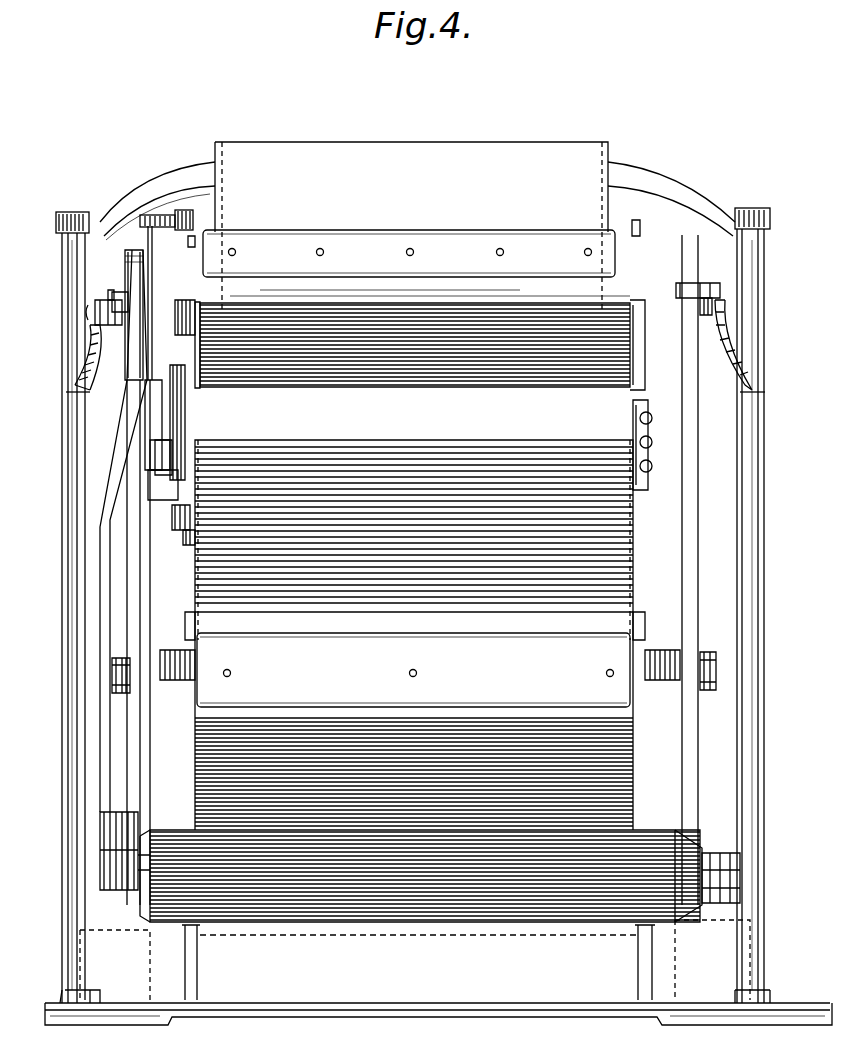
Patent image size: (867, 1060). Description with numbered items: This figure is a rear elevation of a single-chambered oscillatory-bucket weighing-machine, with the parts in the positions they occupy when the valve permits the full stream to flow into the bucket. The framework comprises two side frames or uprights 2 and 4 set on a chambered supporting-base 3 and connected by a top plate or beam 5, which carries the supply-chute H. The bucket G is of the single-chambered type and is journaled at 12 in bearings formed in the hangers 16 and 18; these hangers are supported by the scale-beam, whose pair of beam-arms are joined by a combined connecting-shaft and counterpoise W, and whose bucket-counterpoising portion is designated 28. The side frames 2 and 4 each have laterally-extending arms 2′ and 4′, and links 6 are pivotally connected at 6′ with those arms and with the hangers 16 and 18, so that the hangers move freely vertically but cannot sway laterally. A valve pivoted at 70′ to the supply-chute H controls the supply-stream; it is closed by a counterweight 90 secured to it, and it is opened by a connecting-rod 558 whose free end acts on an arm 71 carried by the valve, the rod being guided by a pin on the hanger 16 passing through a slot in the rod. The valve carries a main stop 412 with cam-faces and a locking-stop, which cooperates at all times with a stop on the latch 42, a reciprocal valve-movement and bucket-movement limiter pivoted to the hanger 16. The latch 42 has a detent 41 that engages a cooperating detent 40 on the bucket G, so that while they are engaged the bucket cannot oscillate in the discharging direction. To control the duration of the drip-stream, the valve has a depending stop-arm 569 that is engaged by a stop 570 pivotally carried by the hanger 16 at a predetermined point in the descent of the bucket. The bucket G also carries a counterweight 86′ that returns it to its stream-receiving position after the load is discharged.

The side frame 2 is at (68, 537).
The side frame 4 is at (752, 532).
The supporting-base 3 is at (400, 985).
The top plate 5 is at (695, 208).
The supply-chute H is at (411, 226).
The counterweight 90 is at (551, 242).
The valve pivot 70′ is at (530, 378).
The arm 71 is at (160, 224).
The link 6 is at (116, 292).
The pivotal connection 6′ is at (92, 312).
The laterally-extending arm 2′ is at (95, 350).
The laterally-extending arm 4′ is at (733, 356).
The stop-arm 569 is at (150, 409).
The stop 570 is at (152, 429).
The connecting-rod 558 is at (150, 449).
The main stop 412 is at (213, 378).
The latch 42 is at (157, 483).
The detent 41 is at (183, 522).
The detent 40 is at (187, 546).
The hanger 16 is at (137, 600).
The hanger 18 is at (692, 568).
The bucket G is at (420, 615).
The counterweight 86′ is at (483, 655).
The bucket journal 12 is at (122, 693).
The combined connecting-shaft and counterpoise W is at (401, 857).
The bucket-counterpoising portion 28 is at (690, 840).